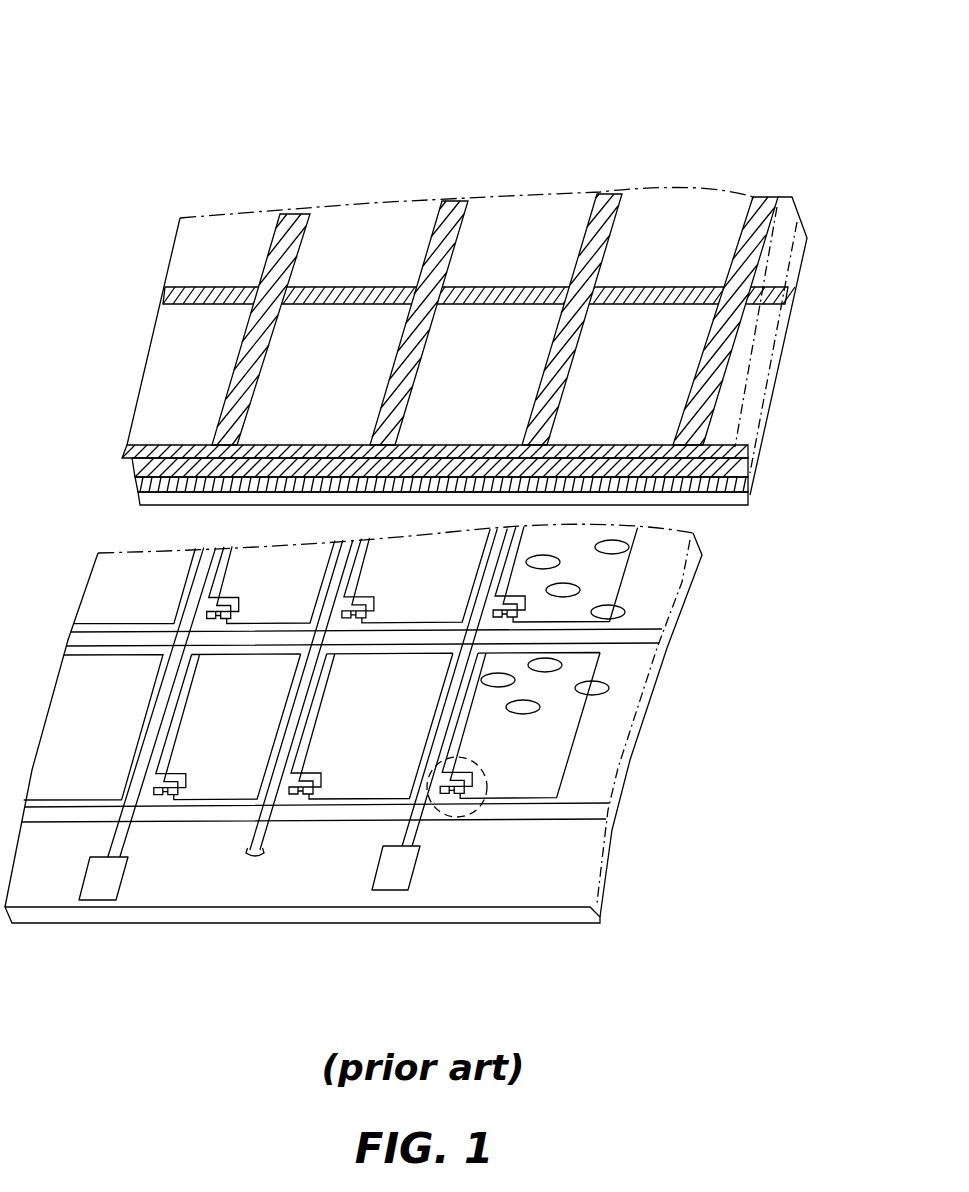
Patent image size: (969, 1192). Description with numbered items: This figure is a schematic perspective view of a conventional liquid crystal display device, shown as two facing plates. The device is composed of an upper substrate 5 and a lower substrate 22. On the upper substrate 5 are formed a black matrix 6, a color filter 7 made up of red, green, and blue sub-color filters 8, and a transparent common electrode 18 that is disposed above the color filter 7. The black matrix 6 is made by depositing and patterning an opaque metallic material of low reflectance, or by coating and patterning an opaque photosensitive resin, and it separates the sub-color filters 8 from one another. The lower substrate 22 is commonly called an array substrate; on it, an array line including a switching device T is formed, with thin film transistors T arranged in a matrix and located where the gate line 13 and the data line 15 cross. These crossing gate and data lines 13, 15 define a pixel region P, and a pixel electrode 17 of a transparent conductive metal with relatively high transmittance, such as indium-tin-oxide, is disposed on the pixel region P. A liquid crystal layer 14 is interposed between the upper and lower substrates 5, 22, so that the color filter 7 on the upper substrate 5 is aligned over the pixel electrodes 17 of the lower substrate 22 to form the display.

The upper substrate 5 is at (142, 467).
The black matrix 6 is at (783, 297).
The color filter 7 is at (650, 90).
The sub-color filters 8 is at (402, 222).
The gate line 13 is at (570, 813).
The liquid crystal layer 14 is at (603, 605).
The data line 15 is at (395, 862).
The pixel electrode 17 is at (563, 770).
The transparent common electrode 18 is at (733, 495).
The lower substrate 22 is at (558, 912).
The pixel region P is at (612, 727).
The switching device T is at (477, 811).